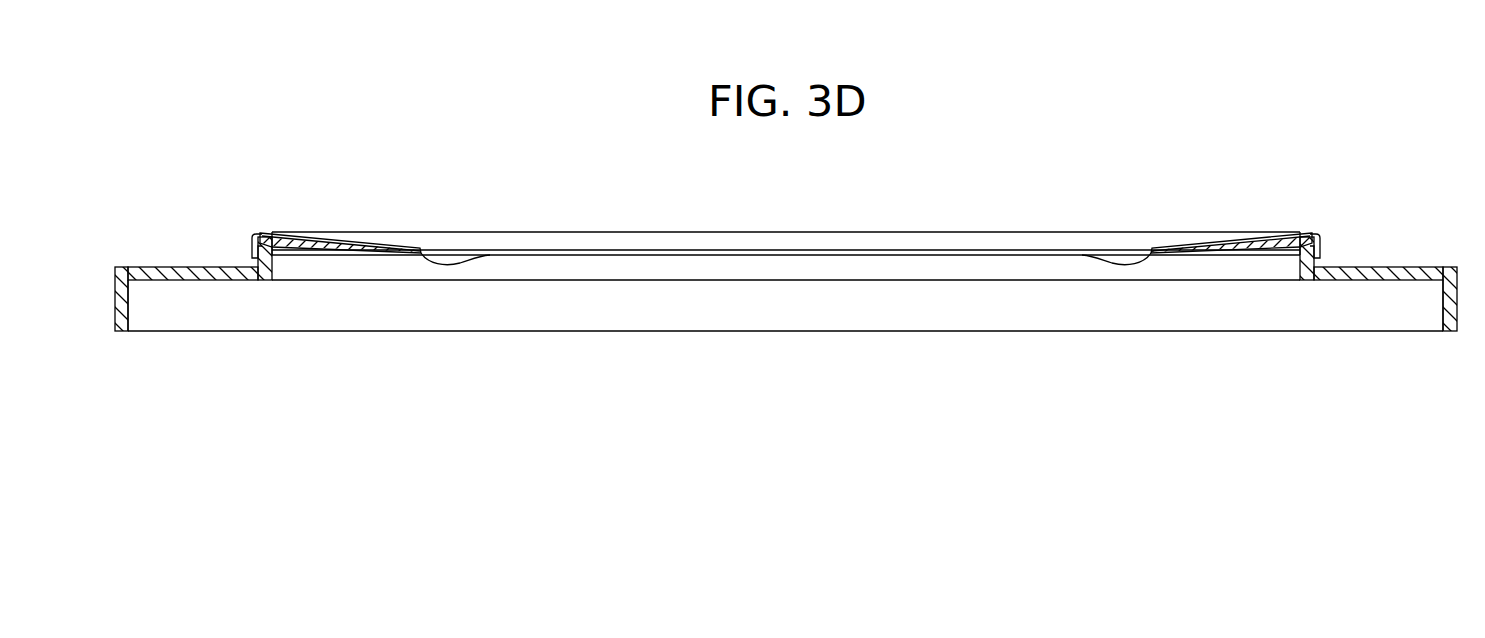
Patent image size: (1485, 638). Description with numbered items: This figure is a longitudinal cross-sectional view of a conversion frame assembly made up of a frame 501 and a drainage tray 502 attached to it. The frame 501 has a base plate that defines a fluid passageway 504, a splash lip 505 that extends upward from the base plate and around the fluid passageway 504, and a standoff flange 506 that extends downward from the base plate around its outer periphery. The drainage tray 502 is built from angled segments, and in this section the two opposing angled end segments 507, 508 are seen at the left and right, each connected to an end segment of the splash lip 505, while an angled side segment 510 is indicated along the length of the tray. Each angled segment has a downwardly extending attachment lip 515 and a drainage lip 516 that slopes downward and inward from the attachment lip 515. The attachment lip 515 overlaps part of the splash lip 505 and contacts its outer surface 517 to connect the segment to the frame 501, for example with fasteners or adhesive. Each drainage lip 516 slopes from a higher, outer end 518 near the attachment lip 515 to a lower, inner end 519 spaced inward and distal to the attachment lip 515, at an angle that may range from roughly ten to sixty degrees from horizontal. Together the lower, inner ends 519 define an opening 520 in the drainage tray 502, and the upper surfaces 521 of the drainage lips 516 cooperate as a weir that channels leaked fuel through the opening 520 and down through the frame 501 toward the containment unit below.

The frame 501 is at (1436, 258).
The drainage tray 502 is at (1281, 112).
The fluid passageway 504 is at (1115, 268).
The splash lip 505 is at (266, 262).
The standoff flange 506 is at (1456, 312).
The angled end segment 507 is at (252, 222).
The angled end segment 508 is at (1319, 224).
The angled side segment 510 is at (952, 230).
The attachment lip 515 is at (248, 242).
The drainage lip 516 is at (350, 243).
The outer surface 517 is at (258, 263).
The outer end 518 is at (264, 234).
The inner end 519 is at (455, 262).
The opening 520 is at (785, 268).
The upper surface 521 is at (318, 240).